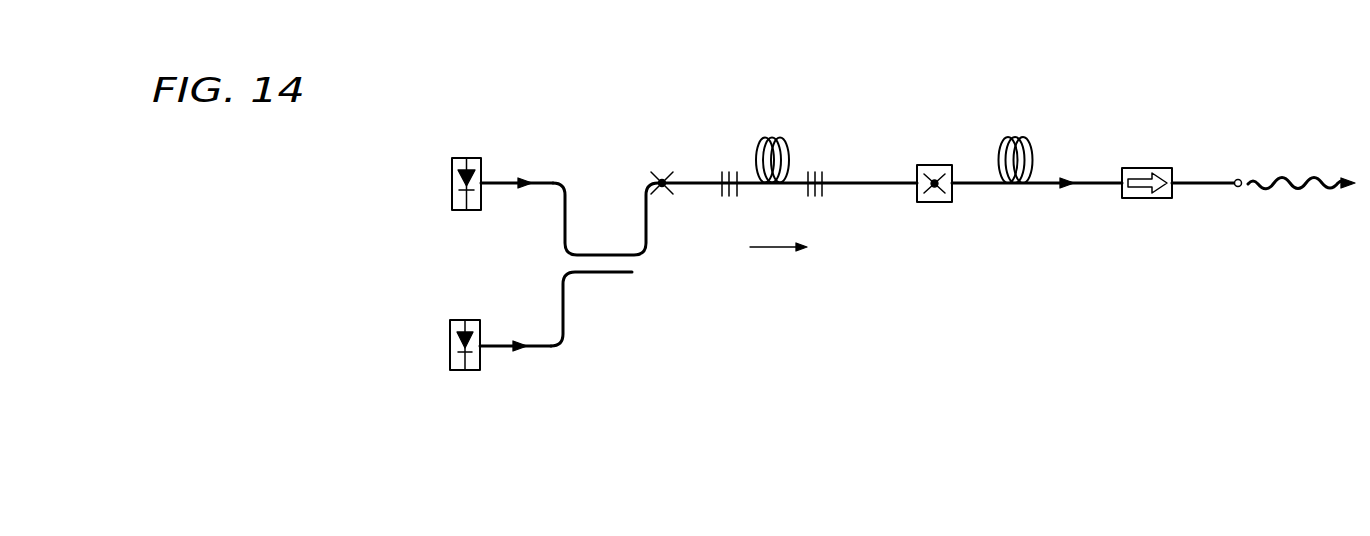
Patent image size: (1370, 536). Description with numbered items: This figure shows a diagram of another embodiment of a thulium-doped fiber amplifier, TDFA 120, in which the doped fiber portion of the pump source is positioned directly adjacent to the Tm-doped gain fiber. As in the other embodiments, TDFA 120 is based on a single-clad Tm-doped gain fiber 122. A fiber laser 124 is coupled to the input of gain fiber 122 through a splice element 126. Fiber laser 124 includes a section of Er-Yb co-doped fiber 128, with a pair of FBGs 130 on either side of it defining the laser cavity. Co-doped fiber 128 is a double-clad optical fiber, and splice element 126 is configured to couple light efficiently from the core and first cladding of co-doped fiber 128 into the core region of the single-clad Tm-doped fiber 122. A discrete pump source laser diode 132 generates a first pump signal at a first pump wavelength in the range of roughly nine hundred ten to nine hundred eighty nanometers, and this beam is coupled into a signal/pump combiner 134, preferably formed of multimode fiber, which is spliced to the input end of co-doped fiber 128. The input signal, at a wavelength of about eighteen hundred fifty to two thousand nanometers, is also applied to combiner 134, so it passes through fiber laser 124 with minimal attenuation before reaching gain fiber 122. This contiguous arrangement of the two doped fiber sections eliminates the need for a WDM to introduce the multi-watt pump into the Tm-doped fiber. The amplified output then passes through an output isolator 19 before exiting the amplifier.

The TDFA 120 is at (276, 176).
The pump source laser diode 132 is at (450, 347).
The signal/pump combiner 134 is at (609, 254).
The fiber laser 124 is at (873, 112).
The FBGs 130 is at (838, 222).
The Er-Yb co-doped fiber 128 is at (773, 185).
The splice element 126 is at (934, 165).
The single-clad Tm-doped gain fiber 122 is at (1015, 186).
The output isolator 19 is at (1147, 168).